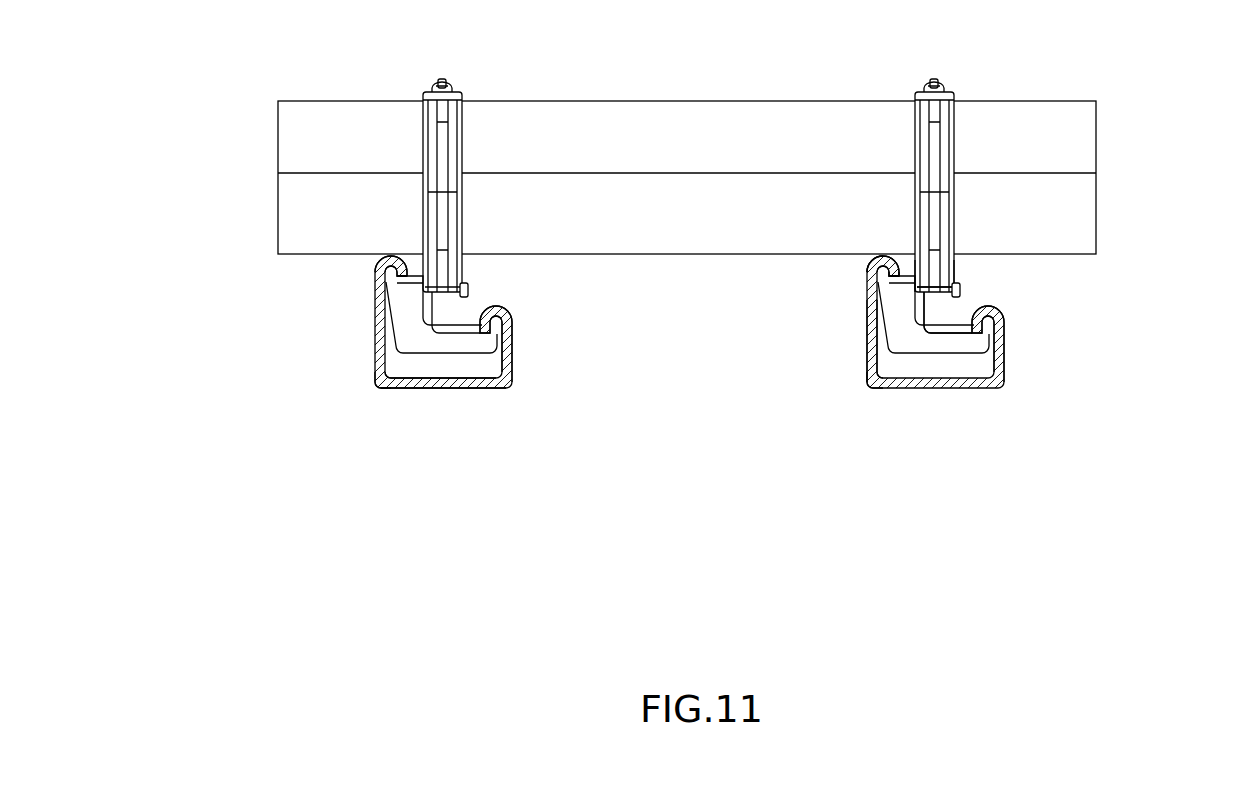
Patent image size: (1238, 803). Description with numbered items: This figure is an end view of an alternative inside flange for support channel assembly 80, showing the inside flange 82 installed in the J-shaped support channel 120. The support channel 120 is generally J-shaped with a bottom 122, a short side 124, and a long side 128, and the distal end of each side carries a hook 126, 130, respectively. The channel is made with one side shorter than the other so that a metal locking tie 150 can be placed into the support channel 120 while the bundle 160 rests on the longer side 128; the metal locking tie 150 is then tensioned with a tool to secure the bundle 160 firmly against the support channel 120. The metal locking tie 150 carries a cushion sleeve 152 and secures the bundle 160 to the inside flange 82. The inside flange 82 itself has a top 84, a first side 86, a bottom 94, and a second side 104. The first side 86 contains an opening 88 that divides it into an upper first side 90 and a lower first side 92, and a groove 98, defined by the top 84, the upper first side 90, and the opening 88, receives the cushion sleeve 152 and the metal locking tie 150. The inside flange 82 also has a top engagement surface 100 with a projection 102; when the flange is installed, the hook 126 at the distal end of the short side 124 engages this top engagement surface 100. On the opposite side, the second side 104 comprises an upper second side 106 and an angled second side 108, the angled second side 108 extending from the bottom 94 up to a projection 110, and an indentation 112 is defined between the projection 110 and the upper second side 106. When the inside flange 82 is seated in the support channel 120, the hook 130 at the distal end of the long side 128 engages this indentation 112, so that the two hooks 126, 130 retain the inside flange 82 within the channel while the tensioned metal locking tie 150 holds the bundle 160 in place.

The support channel assembly 80 is at (303, 314).
The inside flange 82 is at (443, 353).
The top 84 is at (883, 163).
The first side 86 is at (1010, 278).
The opening 88 is at (1004, 322).
The upper first side 90 is at (1047, 295).
The lower first side 92 is at (1034, 382).
The bottom 94 is at (933, 373).
The groove 98 is at (994, 277).
The top engagement surface 100 is at (926, 388).
The projection 102 is at (1038, 353).
The second side 104 is at (821, 368).
The upper second side 106 is at (821, 163).
The angled second side 108 is at (922, 247).
The projection 110 is at (822, 278).
The indentation 112 is at (826, 309).
The support channel 120 is at (380, 388).
The bottom 122 is at (432, 390).
The short side 124 is at (512, 353).
The hook 126 is at (493, 310).
The long side 128 is at (377, 348).
The hook 130 is at (378, 258).
The metal locking tie 150 is at (441, 110).
The cushion sleeve 152 is at (461, 145).
The bundle 160 is at (1068, 143).